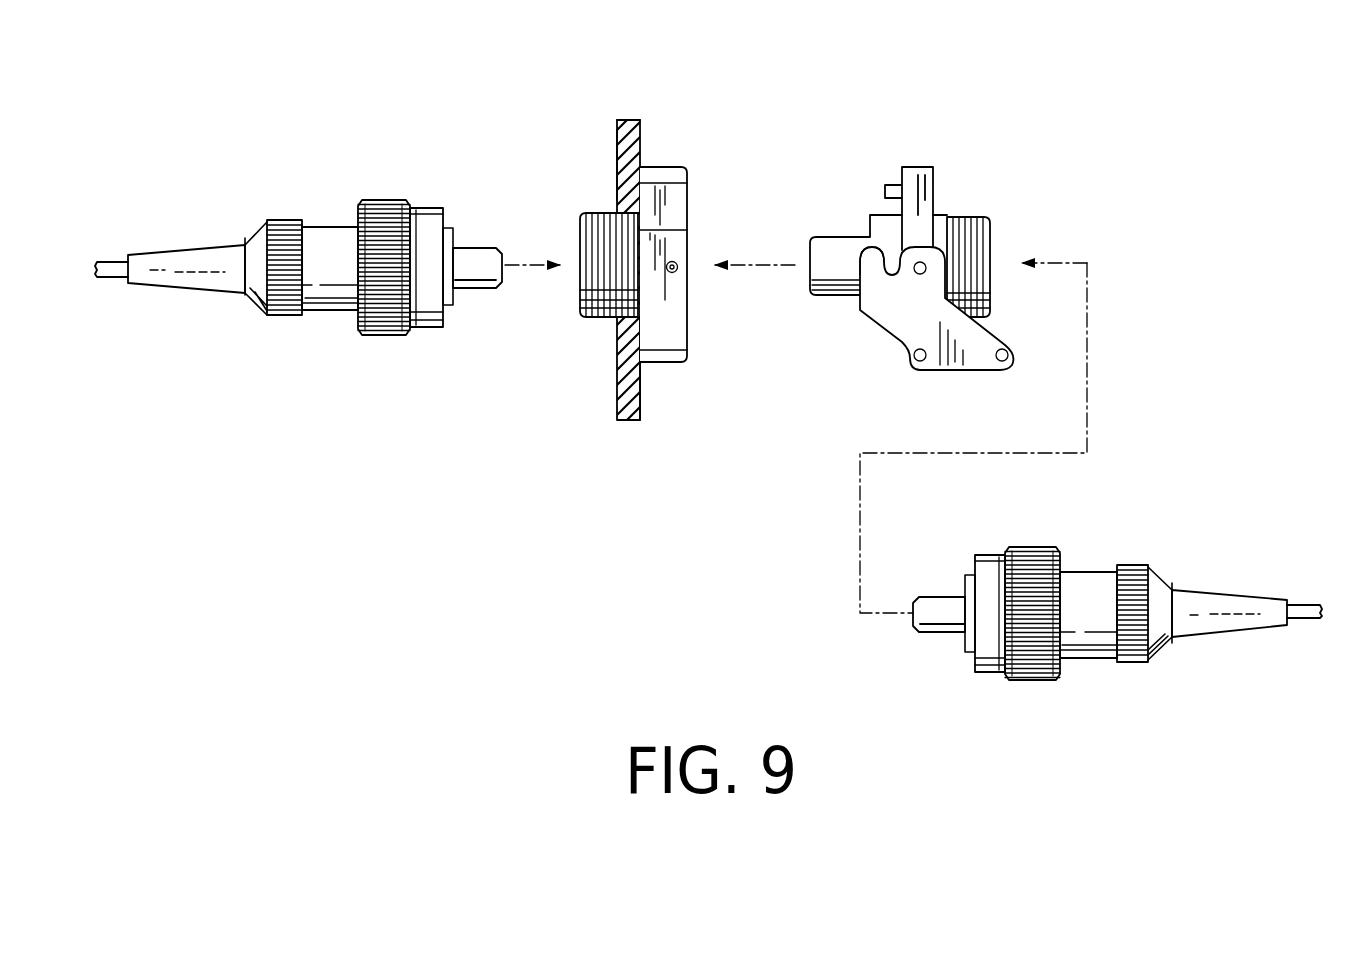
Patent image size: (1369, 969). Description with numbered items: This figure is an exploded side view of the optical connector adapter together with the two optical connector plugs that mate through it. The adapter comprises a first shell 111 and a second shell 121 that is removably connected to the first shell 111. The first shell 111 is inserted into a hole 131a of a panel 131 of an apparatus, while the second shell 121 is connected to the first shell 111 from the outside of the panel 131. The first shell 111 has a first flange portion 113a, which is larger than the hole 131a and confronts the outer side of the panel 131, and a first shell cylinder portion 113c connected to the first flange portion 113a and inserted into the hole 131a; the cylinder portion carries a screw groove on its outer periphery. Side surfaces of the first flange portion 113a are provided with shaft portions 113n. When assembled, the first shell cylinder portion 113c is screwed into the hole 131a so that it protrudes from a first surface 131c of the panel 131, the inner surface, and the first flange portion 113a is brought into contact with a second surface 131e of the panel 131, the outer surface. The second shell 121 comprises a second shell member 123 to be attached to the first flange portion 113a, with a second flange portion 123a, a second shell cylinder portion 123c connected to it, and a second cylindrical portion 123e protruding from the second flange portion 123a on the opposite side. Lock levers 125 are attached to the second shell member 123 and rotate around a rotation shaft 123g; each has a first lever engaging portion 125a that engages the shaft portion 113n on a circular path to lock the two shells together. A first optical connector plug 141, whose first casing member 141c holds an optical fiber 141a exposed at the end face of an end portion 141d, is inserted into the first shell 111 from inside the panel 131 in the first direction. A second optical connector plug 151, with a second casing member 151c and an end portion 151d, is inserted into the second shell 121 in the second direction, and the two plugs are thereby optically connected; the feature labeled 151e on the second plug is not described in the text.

The first shell 111 is at (643, 252).
The first flange portion 113a is at (707, 237).
The first shell cylinder portion 113c is at (600, 322).
The shaft portion 113n is at (680, 272).
The second shell 121 is at (941, 259).
The second shell member 123 is at (941, 244).
The second flange portion 123a is at (918, 168).
The second shell cylinder portion 123c is at (970, 245).
The second cylindrical portion 123e is at (850, 282).
The rotation shaft 123g is at (918, 274).
The lock lever 125 is at (913, 292).
The first lever engaging portion 125a is at (868, 255).
The panel 131 is at (632, 118).
The hole 131a is at (640, 305).
The first surface 131c is at (617, 140).
The second surface 131e is at (640, 122).
The first optical connector plug 141 is at (299, 246).
The optical fiber 141a is at (113, 262).
The first casing member 141c is at (333, 223).
The end portion 141d is at (488, 290).
The second optical connector plug 151 is at (1139, 592).
The second casing member 151c is at (1043, 548).
The end portion 151d is at (935, 634).
The optical cable of second plug 151e is at (1303, 605).